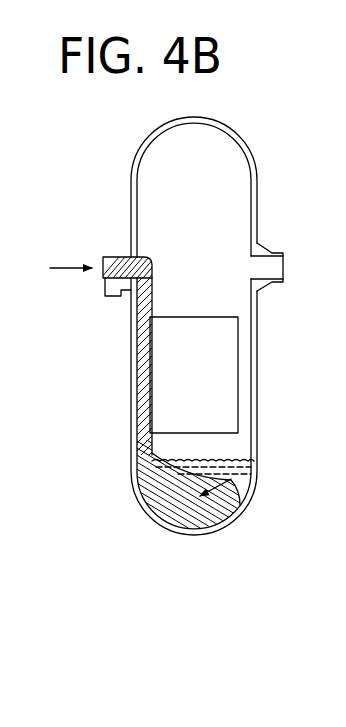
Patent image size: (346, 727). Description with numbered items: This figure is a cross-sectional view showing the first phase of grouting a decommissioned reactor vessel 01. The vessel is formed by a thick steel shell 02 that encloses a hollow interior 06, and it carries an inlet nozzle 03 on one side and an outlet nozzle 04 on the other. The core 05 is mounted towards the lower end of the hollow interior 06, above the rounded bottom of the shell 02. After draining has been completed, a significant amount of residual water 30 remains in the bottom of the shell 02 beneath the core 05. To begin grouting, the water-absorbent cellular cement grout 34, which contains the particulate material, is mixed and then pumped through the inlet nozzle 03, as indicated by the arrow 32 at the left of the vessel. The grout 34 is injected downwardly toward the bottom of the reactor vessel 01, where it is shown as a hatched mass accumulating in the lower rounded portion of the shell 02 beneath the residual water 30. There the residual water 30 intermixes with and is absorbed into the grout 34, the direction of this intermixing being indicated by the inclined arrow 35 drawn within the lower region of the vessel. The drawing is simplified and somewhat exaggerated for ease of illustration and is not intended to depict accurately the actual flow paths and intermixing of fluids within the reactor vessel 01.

The reactor vessel 01 is at (240, 104).
The shell 02 is at (134, 203).
The inlet nozzle 03 is at (105, 257).
The outlet nozzle 04 is at (278, 270).
The core 05 is at (207, 383).
The hollow interior 06 is at (207, 220).
The residual water 30 is at (243, 481).
The arrow 32 is at (58, 271).
The water-absorbent cellular cement grout 34 is at (165, 512).
The sediment indicator arrow 35 is at (231, 479).